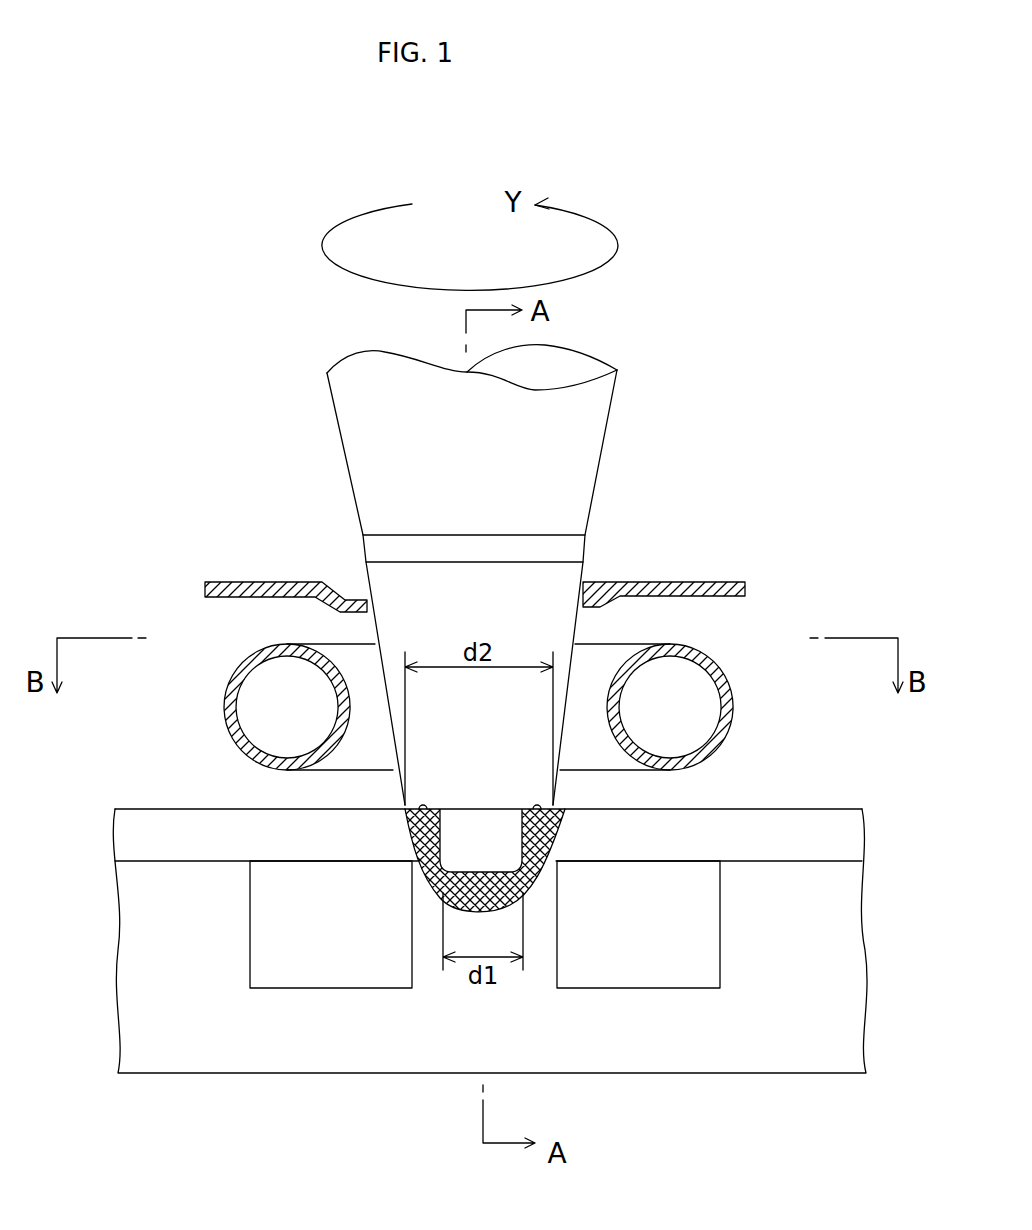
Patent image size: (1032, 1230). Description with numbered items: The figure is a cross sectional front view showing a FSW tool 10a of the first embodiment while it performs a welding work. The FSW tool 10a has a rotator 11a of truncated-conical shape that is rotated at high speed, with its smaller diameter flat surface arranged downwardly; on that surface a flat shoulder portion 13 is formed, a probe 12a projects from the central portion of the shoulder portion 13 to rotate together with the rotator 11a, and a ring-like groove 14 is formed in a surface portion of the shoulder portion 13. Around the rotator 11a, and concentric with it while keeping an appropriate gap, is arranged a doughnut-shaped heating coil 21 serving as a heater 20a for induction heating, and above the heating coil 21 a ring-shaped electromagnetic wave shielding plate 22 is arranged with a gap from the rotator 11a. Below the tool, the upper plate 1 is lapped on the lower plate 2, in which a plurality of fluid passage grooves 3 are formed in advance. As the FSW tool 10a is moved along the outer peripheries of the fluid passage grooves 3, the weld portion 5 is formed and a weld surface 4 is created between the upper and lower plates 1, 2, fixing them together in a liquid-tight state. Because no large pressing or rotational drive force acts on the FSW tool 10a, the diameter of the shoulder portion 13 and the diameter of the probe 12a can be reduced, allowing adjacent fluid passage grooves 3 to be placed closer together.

The upper plate 1 is at (797, 830).
The lower plate 2 is at (760, 1020).
The fluid passage grooves 3 is at (315, 966).
The weld surface 4 is at (830, 862).
The weld portion 5 is at (408, 939).
The FSW tool 10a is at (525, 551).
The rotator 11a is at (348, 380).
The probe 12a is at (483, 832).
The shoulder portion 13 is at (403, 831).
The ring-like groove 14 is at (420, 803).
The heater 20a is at (552, 611).
The heating coil 21 is at (716, 670).
The electromagnetic wave shielding plate 22 is at (710, 582).